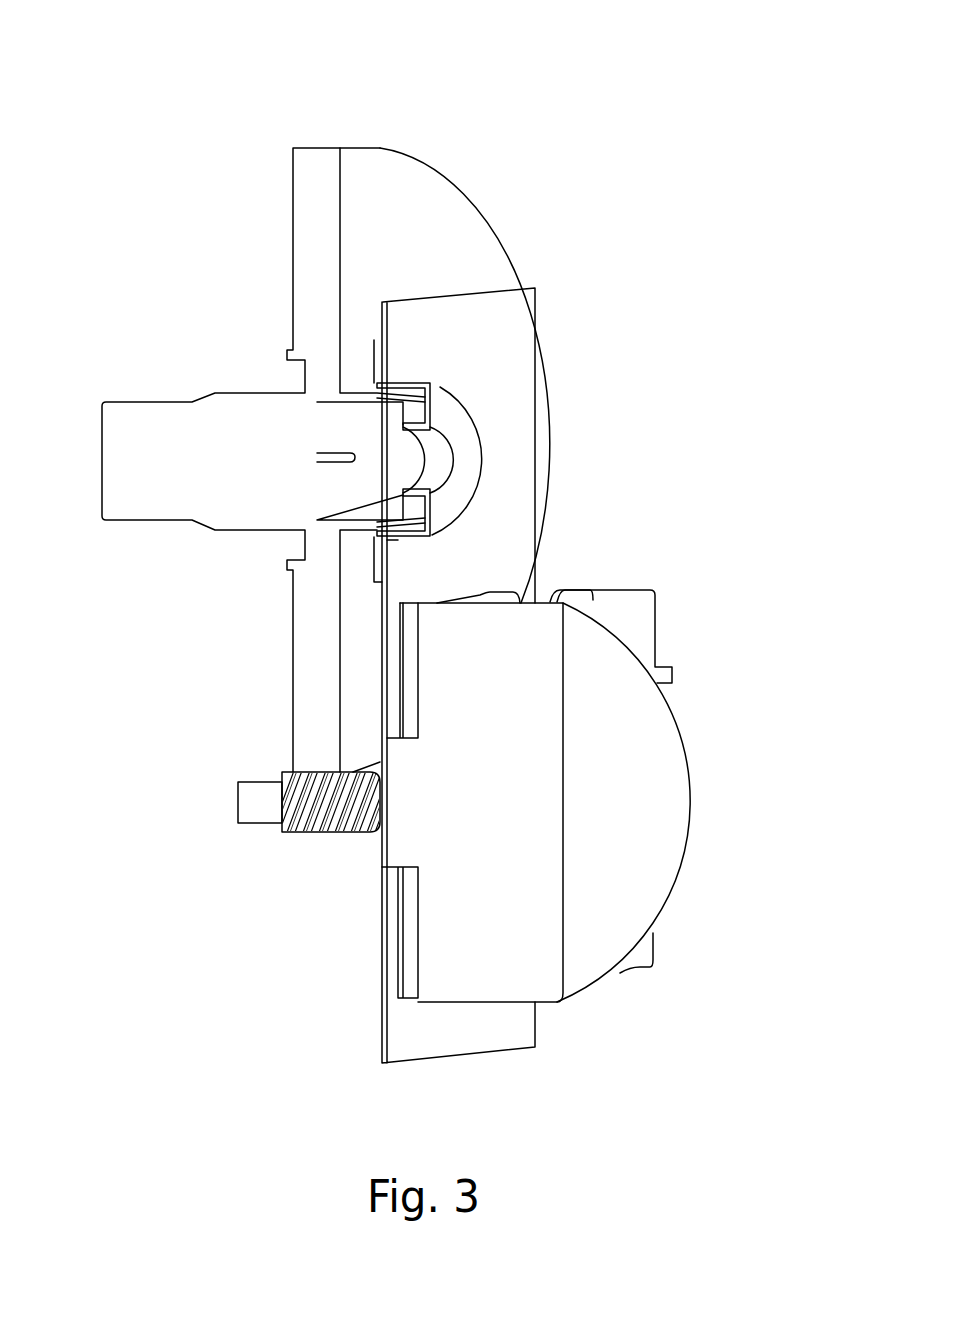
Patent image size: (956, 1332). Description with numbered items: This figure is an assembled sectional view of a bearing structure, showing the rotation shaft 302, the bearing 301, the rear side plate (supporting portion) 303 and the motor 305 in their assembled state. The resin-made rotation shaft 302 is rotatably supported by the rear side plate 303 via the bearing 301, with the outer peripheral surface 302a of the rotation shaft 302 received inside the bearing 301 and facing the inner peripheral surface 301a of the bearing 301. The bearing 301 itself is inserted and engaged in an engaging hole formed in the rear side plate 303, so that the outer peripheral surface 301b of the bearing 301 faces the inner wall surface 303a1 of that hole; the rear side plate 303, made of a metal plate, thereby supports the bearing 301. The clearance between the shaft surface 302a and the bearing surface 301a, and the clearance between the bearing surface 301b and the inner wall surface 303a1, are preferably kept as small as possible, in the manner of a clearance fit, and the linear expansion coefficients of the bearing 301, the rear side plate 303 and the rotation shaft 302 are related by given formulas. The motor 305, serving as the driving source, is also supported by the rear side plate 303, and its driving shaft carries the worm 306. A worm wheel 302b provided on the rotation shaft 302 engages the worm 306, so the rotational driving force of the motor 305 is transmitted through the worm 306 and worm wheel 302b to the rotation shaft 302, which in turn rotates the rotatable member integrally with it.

The bearing 301 is at (465, 418).
The inner peripheral surface of the bearing 301a is at (455, 518).
The outer peripheral surface of the bearing 301b is at (407, 383).
The rotation shaft 302 is at (147, 421).
The outer peripheral surface of the rotation shaft 302a is at (358, 530).
The worm wheel 302b is at (318, 167).
The rear side plate (supporting portion) 303 is at (510, 318).
The inner wall surface of the engaging hole 303a1 is at (393, 537).
The motor 305 is at (678, 790).
The worm 306 is at (307, 828).